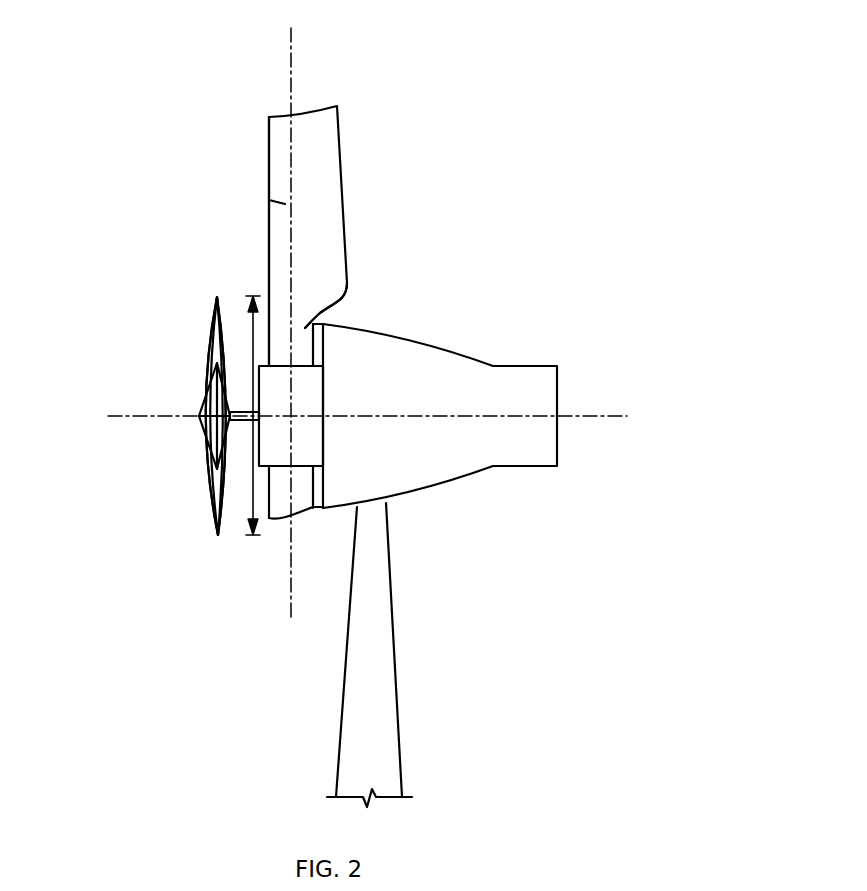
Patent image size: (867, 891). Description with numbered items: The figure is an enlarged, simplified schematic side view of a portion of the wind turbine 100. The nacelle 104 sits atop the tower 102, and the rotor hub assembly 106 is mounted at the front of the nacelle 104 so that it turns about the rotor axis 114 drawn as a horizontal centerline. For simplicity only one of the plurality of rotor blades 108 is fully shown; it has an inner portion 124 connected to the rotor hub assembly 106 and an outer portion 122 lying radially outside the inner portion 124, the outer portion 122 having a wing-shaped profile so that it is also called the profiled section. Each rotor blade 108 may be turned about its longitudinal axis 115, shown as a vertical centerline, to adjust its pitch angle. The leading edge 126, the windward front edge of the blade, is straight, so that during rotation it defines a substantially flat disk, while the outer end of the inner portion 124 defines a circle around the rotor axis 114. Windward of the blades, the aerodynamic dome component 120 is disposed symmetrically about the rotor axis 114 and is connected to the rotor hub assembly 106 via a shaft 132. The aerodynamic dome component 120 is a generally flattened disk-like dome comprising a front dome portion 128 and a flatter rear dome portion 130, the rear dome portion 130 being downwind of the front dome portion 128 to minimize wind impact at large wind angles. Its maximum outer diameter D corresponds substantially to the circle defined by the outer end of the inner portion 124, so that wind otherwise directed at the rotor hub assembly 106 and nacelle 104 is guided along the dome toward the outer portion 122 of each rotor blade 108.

The wind turbine 100 is at (452, 240).
The tower 102 is at (382, 623).
The nacelle 104 is at (478, 378).
The rotor hub assembly 106 is at (313, 395).
The rotor blade 108 is at (335, 197).
The rotor axis 114 is at (610, 416).
The longitudinal axis 115 is at (291, 66).
The aerodynamic dome component 120 is at (200, 492).
The outer portion 122 is at (286, 204).
The inner portion 124 is at (305, 330).
The leading edge 126 is at (268, 142).
The front dome portion 128 is at (200, 340).
The rear dome portion 130 is at (227, 510).
The shaft 132 is at (243, 410).
The maximum outer diameter D is at (262, 318).